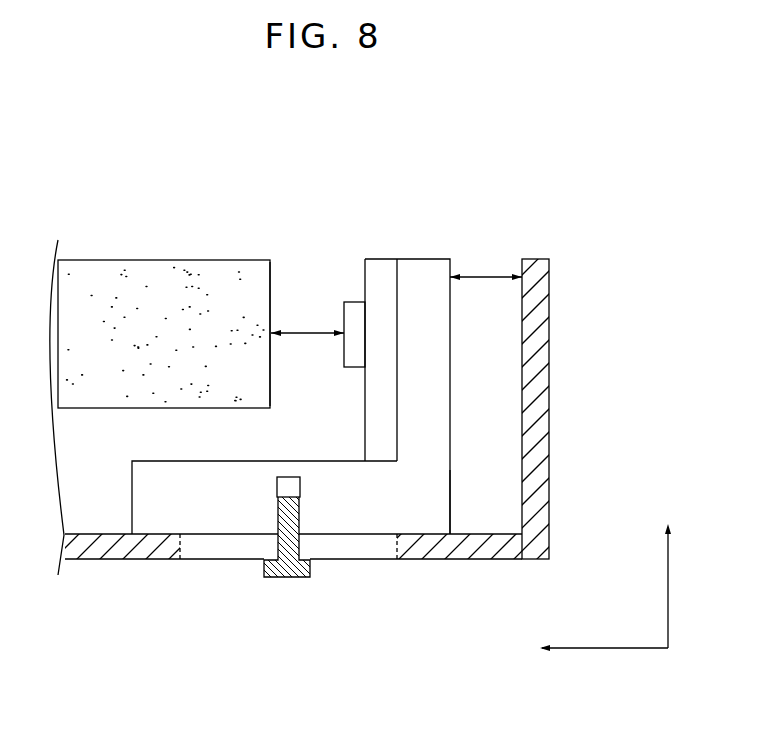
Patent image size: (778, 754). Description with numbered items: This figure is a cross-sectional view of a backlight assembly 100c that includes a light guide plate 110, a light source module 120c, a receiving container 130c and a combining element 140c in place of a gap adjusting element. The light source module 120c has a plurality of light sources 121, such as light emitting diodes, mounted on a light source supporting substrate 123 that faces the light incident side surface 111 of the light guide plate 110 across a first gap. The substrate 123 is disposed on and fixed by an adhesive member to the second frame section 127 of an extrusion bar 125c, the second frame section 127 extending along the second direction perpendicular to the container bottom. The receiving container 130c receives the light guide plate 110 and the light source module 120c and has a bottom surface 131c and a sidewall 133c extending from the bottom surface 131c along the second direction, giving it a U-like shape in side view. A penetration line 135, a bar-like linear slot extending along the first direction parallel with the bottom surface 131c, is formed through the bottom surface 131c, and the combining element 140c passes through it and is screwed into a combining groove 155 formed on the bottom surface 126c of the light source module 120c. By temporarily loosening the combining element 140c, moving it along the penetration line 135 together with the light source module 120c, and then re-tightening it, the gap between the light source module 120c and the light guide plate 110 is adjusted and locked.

The backlight assembly 100c is at (318, 173).
The light guide plate 110 is at (163, 268).
The light incident side surface 111 is at (273, 266).
The light source module 120c is at (337, 208).
The light sources 121 is at (351, 310).
The light source supporting substrate 123 is at (390, 270).
The extrusion bar 125c is at (431, 270).
The second frame section 127 is at (449, 504).
The bottom surface of light source module 126c is at (163, 513).
The receiving container 130c is at (389, 418).
The bottom surface of receiving container 131c is at (93, 515).
The sidewall 133c is at (550, 485).
The penetration line 135 is at (359, 545).
The combining element 140c is at (285, 578).
The combining groove 155 is at (276, 489).